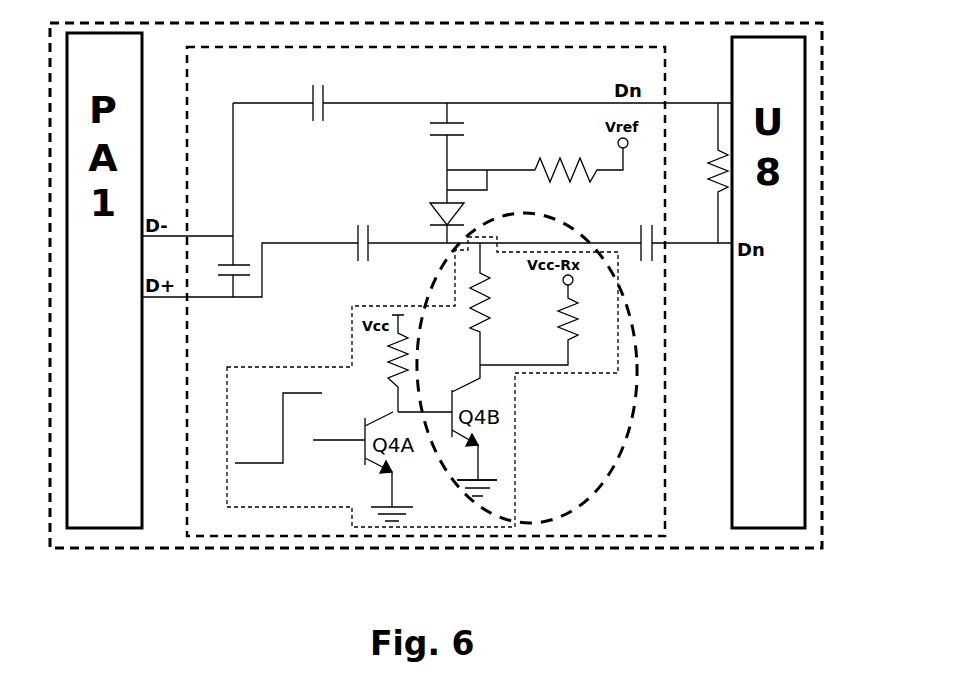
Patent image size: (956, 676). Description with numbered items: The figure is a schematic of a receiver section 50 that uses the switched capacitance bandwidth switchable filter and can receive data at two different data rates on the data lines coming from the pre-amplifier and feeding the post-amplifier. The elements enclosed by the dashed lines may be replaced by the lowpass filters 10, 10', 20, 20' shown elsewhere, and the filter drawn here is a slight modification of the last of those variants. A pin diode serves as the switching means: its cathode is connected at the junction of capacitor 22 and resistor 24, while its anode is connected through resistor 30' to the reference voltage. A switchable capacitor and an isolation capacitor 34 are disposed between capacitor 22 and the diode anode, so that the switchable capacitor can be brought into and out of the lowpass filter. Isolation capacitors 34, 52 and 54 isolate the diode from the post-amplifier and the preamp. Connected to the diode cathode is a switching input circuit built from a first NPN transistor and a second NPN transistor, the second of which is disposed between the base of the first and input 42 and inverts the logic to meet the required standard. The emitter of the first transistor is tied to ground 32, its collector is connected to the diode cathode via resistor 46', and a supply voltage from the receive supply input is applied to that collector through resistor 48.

The receiver section 50 is at (196, 553).
The capacitor 22 is at (673, 515).
The isolation capacitor 34 is at (310, 90).
The resistor 30' is at (581, 157).
The isolation capacitor 52 is at (356, 234).
The isolation capacitor 54 is at (640, 234).
The resistor 24 is at (702, 173).
The variable lowpass filter 10 is at (608, 414).
The lowpass filter 10' is at (608, 414).
The lowpass filter 20 is at (608, 414).
The lowpass filter 20' is at (608, 414).
The resistor 46' is at (499, 304).
The resistor 48 is at (542, 320).
The input 42 is at (250, 465).
The ground 32 is at (466, 500).